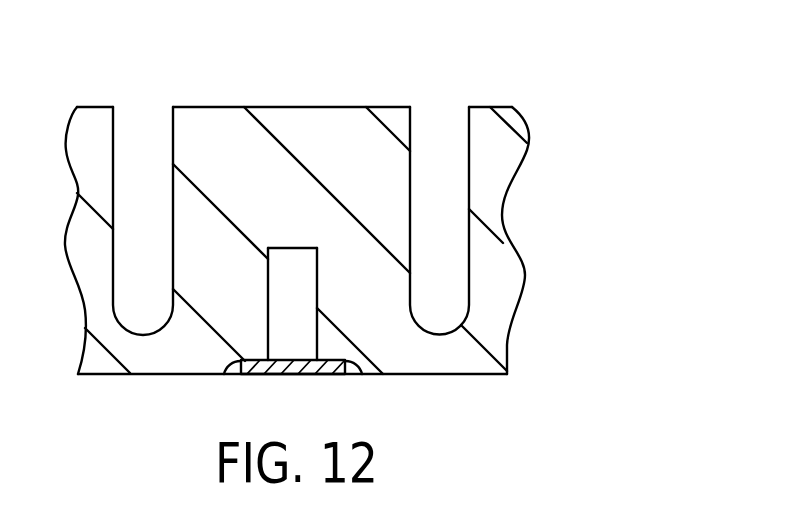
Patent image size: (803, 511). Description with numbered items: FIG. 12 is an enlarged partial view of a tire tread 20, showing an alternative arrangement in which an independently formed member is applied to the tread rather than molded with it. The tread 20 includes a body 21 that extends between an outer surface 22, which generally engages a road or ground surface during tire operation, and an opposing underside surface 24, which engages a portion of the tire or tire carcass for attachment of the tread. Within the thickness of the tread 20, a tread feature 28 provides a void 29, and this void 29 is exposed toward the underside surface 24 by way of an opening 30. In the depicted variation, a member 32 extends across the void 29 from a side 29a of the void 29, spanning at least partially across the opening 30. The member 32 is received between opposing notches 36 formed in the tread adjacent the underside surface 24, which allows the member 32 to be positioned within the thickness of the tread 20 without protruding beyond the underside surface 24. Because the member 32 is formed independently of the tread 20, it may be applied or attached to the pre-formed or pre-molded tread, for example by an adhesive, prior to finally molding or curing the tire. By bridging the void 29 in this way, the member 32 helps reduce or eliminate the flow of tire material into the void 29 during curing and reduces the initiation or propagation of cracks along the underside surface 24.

The tread 20 is at (593, 151).
The body 21 is at (503, 275).
The outer surface 22 is at (313, 107).
The underside surface 24 is at (453, 374).
The tread feature 28 is at (288, 241).
The void 29 is at (288, 241).
The side 29a is at (268, 292).
The opening 30 is at (293, 356).
The member 32 is at (252, 374).
The notches 36 is at (241, 361).